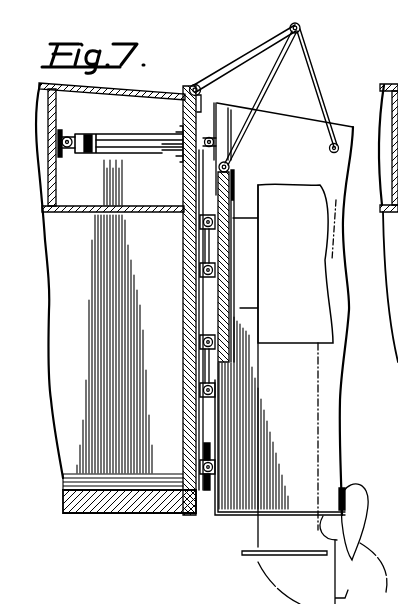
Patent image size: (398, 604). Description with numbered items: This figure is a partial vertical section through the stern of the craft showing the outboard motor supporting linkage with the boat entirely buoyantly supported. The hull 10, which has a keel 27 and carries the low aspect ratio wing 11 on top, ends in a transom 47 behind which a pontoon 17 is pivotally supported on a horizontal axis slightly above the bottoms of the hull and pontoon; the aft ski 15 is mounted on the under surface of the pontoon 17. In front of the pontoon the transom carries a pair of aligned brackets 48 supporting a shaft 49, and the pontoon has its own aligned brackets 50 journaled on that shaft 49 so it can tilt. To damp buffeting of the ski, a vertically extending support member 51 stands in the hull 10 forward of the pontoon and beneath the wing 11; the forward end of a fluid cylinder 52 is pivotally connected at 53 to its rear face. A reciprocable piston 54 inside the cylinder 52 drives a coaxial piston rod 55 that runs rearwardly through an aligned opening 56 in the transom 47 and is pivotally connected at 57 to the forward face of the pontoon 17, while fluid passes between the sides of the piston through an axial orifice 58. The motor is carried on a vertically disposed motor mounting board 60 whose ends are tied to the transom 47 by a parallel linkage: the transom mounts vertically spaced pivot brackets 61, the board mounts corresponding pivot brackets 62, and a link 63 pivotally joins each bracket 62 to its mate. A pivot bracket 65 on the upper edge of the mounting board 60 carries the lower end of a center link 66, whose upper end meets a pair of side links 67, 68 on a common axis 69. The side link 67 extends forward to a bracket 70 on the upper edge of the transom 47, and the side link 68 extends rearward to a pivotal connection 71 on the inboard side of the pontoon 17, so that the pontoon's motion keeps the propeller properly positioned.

The hull 10 is at (112, 337).
The low aspect ratio wing 11 is at (119, 90).
The aft ski 15 is at (276, 516).
The pontoon 17 is at (340, 412).
The keel 27 is at (97, 514).
The transom 47 is at (183, 376).
The brackets 48 is at (200, 466).
The shaft 49 is at (215, 475).
The brackets 50 is at (215, 466).
The support member 51 is at (57, 191).
The fluid cylinder 52 is at (92, 136).
The pivotal connection 53 is at (66, 137).
The piston 54 is at (94, 153).
The piston rod 55 is at (183, 165).
The opening 56 is at (186, 133).
The pivotal connection 57 is at (224, 118).
The orifice 58 is at (117, 137).
The motor mounting board 60 is at (230, 290).
The pivot brackets 61 is at (200, 273).
The pivot brackets 62 is at (200, 340).
The link 63 is at (200, 247).
The pivot bracket 65 is at (232, 170).
The center link 66 is at (264, 100).
The side link 67 is at (247, 57).
The side link 68 is at (317, 64).
The common axis 69 is at (301, 29).
The bracket 70 is at (192, 85).
The pivotal connection 71 is at (330, 153).